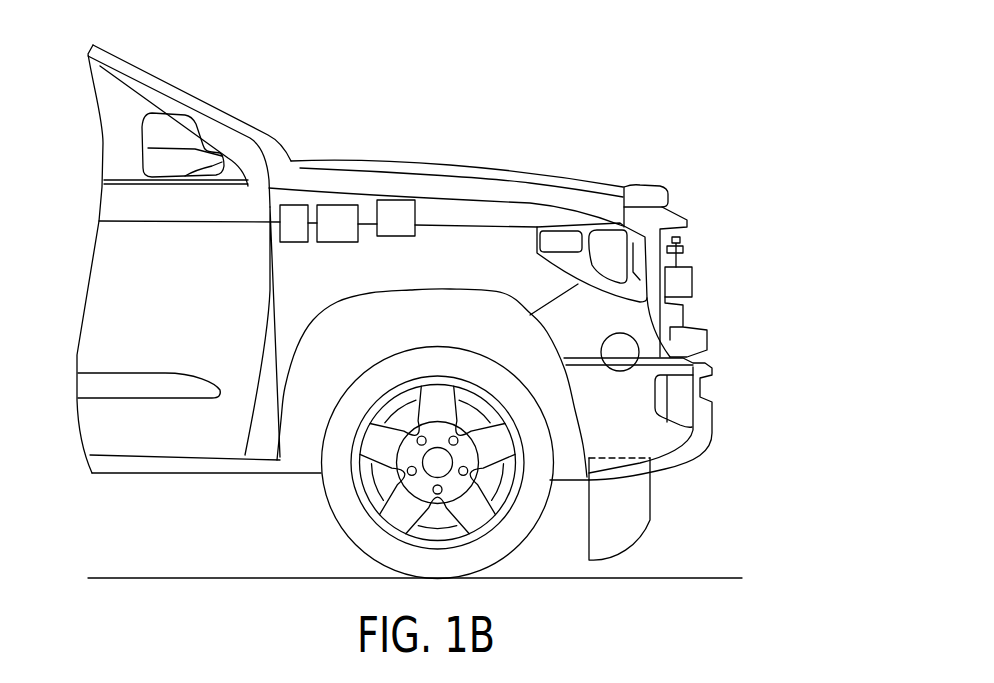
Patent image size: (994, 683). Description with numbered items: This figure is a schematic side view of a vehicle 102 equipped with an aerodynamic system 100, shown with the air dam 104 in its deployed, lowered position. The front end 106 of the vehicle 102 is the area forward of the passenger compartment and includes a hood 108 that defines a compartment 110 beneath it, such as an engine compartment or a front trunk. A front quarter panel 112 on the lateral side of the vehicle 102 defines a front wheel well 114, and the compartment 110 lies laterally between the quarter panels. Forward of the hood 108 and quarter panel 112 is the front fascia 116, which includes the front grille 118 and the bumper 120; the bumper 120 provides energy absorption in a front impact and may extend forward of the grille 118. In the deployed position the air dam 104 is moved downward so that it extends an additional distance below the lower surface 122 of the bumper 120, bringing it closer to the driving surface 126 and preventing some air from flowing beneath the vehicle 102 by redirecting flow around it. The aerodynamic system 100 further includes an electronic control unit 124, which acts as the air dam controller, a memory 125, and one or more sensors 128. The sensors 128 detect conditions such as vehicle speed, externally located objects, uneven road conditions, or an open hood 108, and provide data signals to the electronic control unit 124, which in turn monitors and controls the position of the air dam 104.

The aerodynamic system 100 is at (436, 292).
The vehicle 102 is at (186, 72).
The air dam 104 is at (650, 520).
The front end 106 is at (650, 188).
The hood 108 is at (562, 175).
The compartment 110 is at (487, 212).
The front quarter panel 112 is at (440, 217).
The front wheel well 114 is at (447, 290).
The front fascia 116 is at (675, 325).
The front grille 118 is at (690, 263).
The bumper 120 is at (715, 412).
The lower surface 122 is at (660, 470).
The electronic control unit (ECU) 124 is at (337, 205).
The memory 125 is at (290, 205).
The driving surface 126 is at (547, 578).
The sensors 128 is at (393, 200).